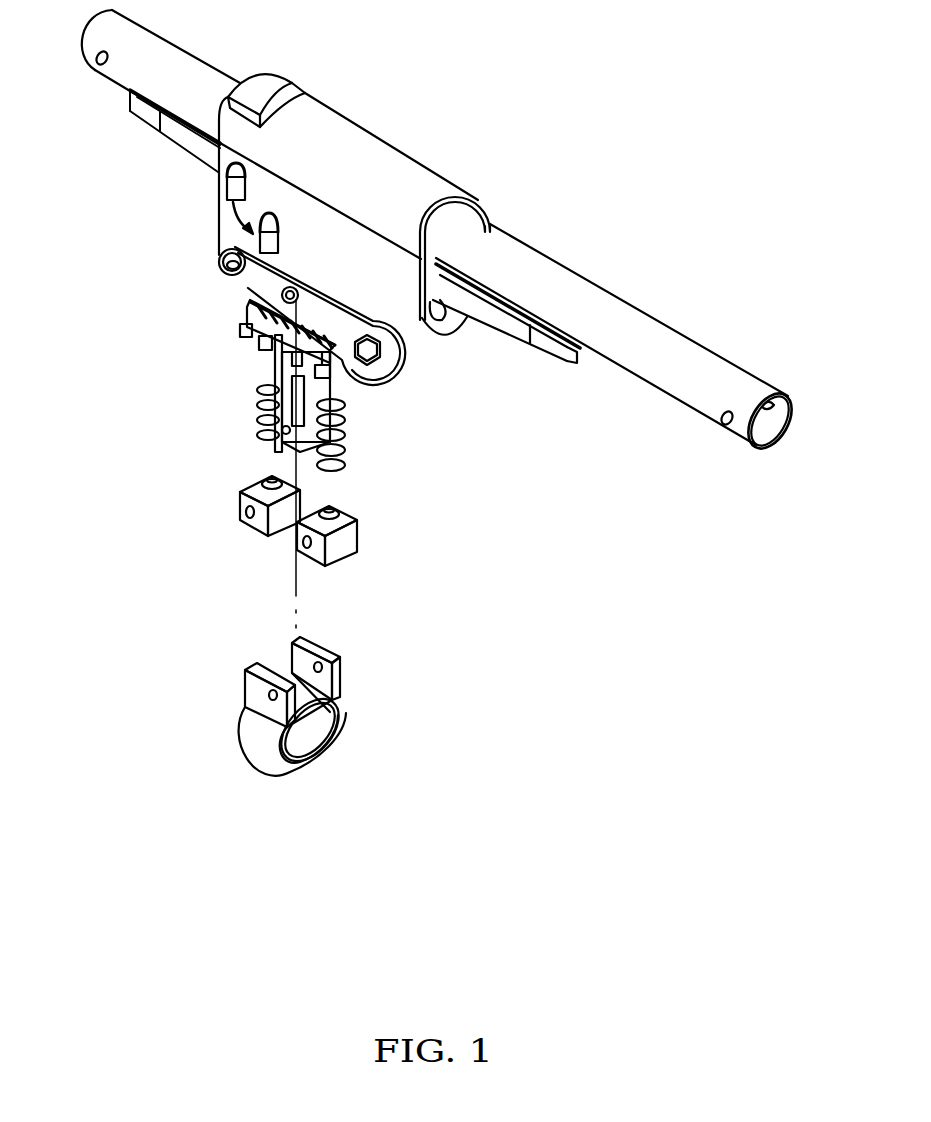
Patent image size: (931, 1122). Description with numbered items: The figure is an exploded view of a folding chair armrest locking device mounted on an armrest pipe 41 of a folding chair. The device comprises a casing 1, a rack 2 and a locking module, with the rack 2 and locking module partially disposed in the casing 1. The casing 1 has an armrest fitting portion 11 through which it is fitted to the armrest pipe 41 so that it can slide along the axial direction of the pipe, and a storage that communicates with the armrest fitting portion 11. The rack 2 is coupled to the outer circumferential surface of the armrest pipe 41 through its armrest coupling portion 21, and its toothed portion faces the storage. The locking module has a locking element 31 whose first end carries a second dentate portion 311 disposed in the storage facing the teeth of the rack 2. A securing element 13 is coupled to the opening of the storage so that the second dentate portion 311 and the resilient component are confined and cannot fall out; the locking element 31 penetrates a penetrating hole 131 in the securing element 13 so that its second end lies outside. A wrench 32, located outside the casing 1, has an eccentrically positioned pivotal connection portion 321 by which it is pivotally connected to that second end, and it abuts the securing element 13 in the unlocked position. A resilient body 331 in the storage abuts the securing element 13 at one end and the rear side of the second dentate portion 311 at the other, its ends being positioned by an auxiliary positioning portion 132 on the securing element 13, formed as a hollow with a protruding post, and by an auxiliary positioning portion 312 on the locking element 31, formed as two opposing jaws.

The casing 1 is at (367, 162).
The armrest fitting portion 11 is at (472, 203).
The rack 2 is at (503, 328).
The armrest coupling portion 21 is at (187, 130).
The armrest pipe 41 is at (612, 313).
The locking element 31 is at (260, 395).
The second dentate portion 311 is at (245, 300).
The auxiliary positioning portion 312 is at (348, 402).
The resilient body 331 is at (260, 428).
The securing element 13 is at (343, 538).
The penetrating hole 131 is at (273, 543).
The auxiliary positioning portion 132 is at (330, 510).
The wrench 32 is at (350, 695).
The pivotal connection portion 321 is at (337, 653).